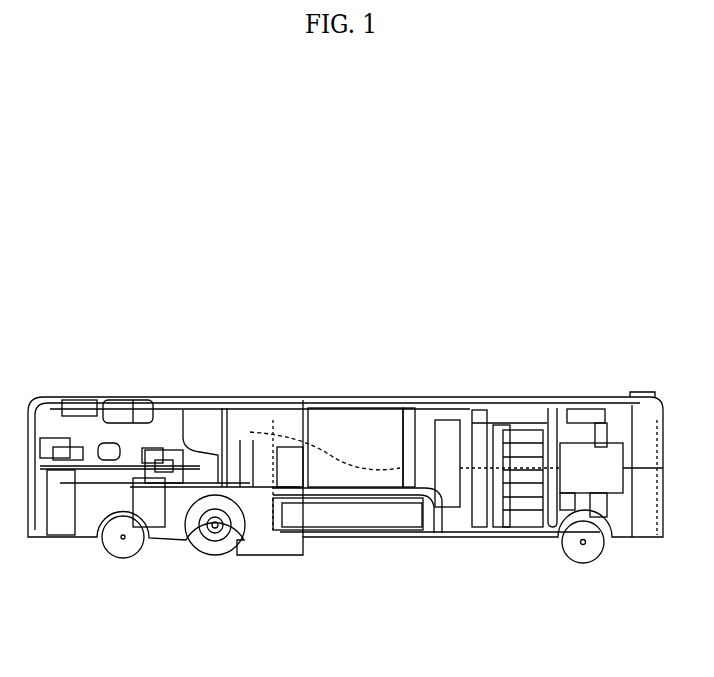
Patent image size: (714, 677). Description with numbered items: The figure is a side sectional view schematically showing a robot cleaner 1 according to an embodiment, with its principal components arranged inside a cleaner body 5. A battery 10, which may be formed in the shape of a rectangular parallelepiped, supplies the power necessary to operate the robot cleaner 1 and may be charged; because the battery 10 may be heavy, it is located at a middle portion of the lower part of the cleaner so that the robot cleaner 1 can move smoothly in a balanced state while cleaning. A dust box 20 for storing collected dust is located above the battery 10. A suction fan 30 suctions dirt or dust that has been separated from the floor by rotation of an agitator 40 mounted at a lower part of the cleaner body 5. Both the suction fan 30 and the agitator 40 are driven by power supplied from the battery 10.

The robot cleaner 1 is at (569, 309).
The cleaner body 5 is at (641, 402).
The battery 10 is at (366, 518).
The dust box 20 is at (359, 412).
The suction fan 30 is at (528, 538).
The agitator 40 is at (213, 556).